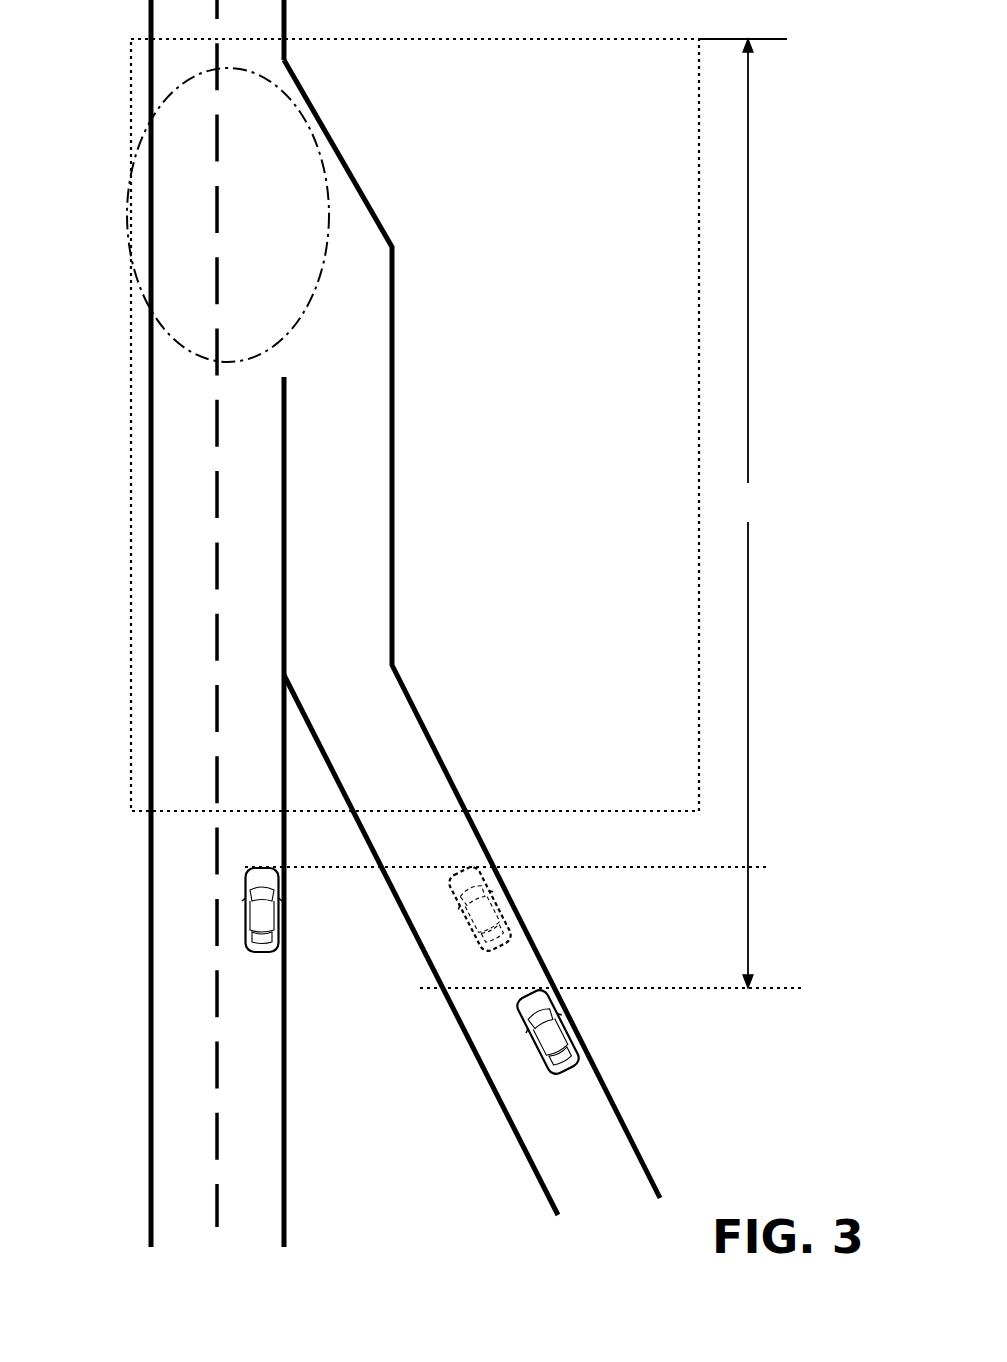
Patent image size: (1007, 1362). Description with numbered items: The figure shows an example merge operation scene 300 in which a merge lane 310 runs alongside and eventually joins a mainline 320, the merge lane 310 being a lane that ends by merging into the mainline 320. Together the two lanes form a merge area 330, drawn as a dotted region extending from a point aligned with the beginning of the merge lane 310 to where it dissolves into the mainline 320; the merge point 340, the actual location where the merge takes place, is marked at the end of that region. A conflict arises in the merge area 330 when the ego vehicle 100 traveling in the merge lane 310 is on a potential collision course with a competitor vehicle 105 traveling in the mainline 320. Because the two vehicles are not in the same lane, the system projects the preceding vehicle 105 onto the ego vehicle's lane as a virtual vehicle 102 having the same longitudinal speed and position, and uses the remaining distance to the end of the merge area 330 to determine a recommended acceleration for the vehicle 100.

The merge operation scene 300 is at (458, 1262).
The mainline 320 is at (150, 402).
The merge lane 310 is at (652, 1176).
The merge area 330 is at (699, 285).
The merge point 340 is at (330, 165).
The vehicle 105 is at (268, 918).
The virtual vehicle 102 is at (486, 914).
The vehicle 100 is at (552, 1032).